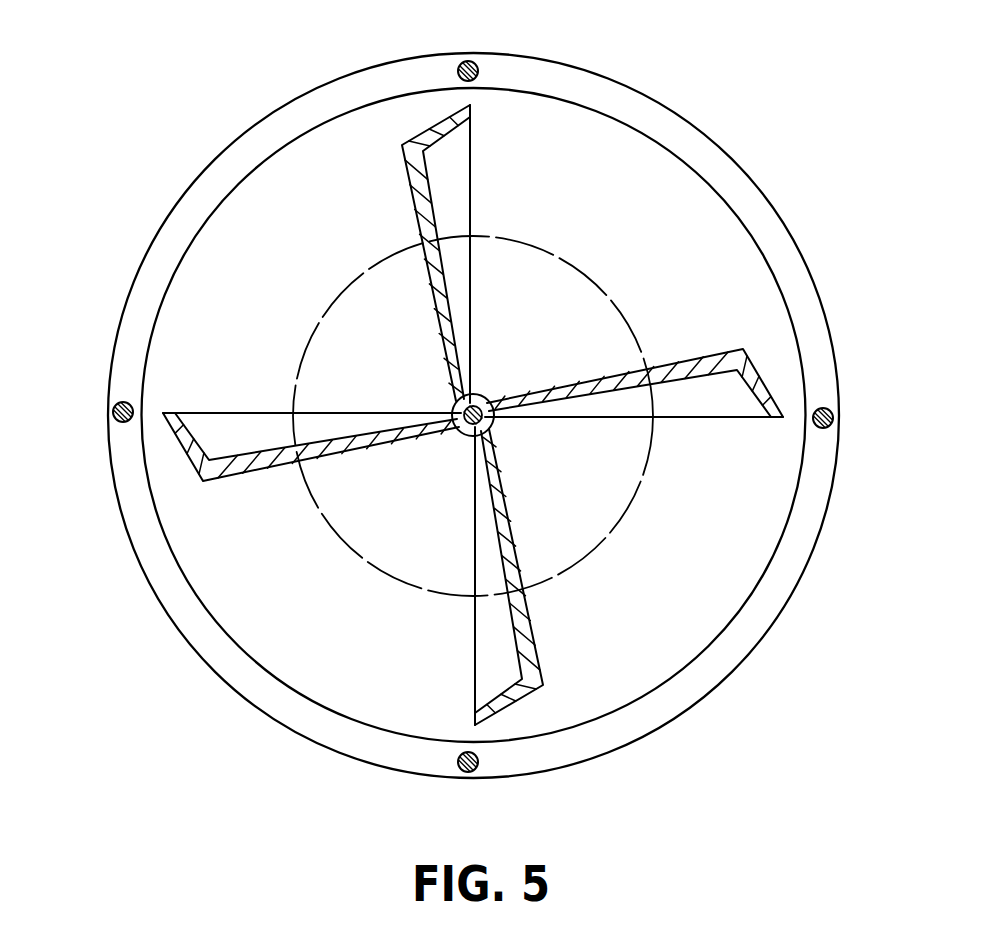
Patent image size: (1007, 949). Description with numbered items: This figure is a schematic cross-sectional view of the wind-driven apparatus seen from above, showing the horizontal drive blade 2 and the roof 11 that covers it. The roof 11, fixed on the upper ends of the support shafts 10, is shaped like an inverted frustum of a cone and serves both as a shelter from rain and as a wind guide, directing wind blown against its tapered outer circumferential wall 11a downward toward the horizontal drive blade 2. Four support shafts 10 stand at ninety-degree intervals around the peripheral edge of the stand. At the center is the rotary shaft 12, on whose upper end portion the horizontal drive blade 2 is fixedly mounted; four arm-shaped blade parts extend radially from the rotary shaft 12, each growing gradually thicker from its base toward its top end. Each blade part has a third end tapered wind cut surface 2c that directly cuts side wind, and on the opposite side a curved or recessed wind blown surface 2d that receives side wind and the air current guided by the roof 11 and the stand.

The horizontal drive blade 2 is at (474, 391).
The third end tapered wind cut surface 2c is at (418, 137).
The wind blown surface 2d is at (460, 177).
The support shaft 10 is at (476, 64).
The roof 11 is at (478, 415).
The tapered outer circumferential wall 11a is at (732, 588).
The rotary shaft 12 is at (486, 422).